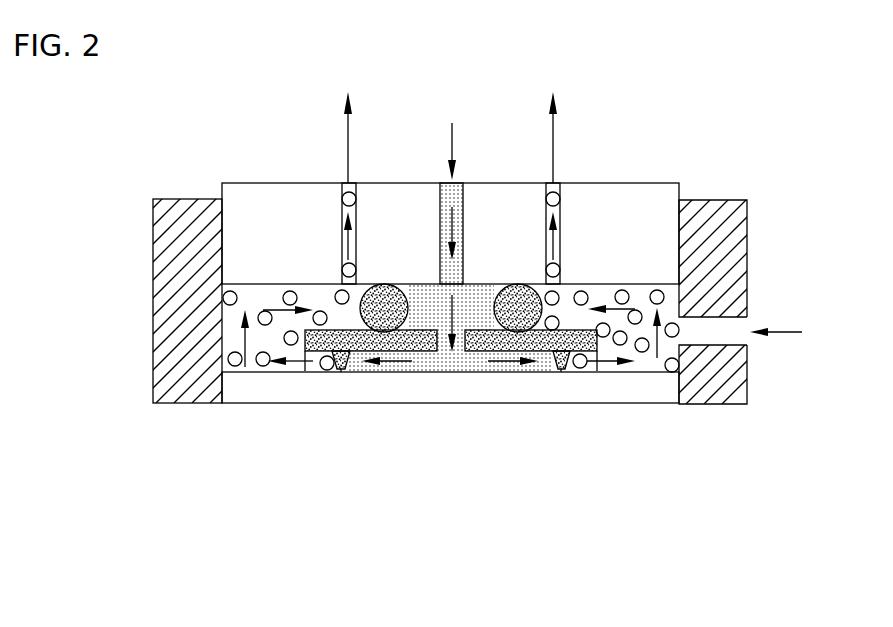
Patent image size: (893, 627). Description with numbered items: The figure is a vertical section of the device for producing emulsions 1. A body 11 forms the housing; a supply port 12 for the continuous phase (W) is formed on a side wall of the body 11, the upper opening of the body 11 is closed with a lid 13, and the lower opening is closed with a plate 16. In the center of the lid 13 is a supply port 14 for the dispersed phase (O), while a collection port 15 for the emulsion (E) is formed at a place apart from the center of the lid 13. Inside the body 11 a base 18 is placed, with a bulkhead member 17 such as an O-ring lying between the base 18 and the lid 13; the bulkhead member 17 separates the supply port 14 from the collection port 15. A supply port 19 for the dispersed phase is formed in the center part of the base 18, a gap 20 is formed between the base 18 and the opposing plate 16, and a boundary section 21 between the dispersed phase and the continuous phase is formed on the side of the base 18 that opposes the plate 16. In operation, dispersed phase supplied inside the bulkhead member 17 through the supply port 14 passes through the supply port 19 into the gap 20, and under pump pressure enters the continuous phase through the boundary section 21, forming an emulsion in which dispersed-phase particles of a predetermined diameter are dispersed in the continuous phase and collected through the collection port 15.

The device for producing emulsions 1 is at (258, 169).
The body 11 is at (152, 308).
The supply port for continuous phase 12 is at (743, 328).
The lid 13 is at (600, 198).
The supply port for dispersed phase 14 is at (438, 212).
The collection port for emulsion 15 is at (342, 220).
The plate 16 is at (377, 393).
The bulkhead member 17 is at (540, 293).
The base 18 is at (495, 352).
The supply port of base 19 is at (438, 338).
The gap 20 is at (398, 358).
The boundary section 21 is at (567, 368).